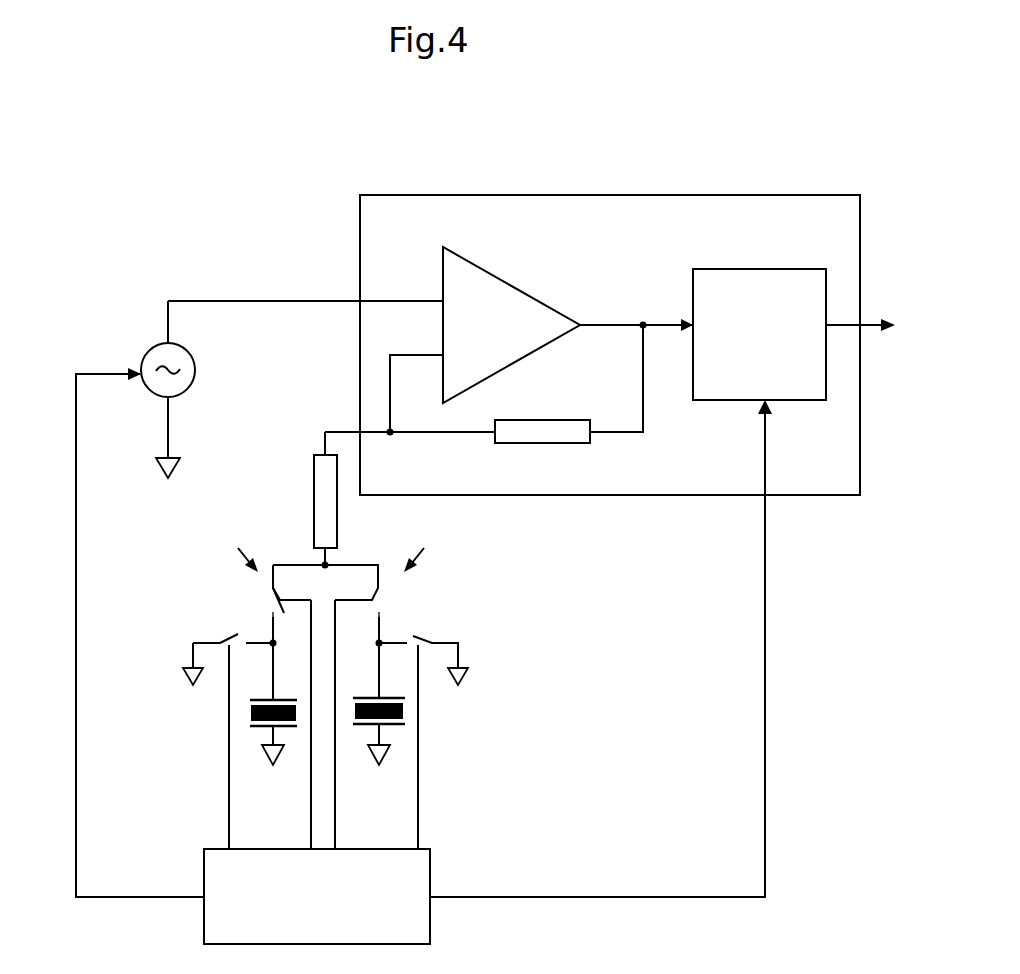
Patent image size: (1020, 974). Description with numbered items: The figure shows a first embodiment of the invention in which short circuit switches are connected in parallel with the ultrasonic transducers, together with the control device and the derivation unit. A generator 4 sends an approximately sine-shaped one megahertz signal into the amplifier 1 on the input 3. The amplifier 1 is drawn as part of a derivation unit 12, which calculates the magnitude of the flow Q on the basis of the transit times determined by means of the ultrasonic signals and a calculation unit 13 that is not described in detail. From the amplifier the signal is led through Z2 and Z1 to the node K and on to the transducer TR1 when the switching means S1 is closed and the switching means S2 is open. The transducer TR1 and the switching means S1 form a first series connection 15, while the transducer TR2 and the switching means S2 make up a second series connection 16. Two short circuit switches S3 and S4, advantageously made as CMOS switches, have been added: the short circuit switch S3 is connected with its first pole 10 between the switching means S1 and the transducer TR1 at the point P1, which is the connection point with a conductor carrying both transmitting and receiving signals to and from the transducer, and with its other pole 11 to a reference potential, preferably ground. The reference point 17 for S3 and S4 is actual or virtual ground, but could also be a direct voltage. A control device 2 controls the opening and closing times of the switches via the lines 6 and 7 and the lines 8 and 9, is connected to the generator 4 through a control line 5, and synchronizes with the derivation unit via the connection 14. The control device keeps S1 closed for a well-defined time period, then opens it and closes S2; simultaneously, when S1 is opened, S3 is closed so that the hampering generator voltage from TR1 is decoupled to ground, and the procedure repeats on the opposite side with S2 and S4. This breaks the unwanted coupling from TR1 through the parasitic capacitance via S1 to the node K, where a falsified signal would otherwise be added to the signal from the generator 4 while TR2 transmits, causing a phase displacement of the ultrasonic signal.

The amplifier 1 is at (511, 325).
The control device 2 is at (317, 896).
The input 3 is at (410, 301).
The generator 4 is at (147, 351).
The control line 5 is at (76, 570).
The line 6 is at (229, 812).
The line 7 is at (418, 812).
The control line for switch S1 8 is at (311, 812).
The control line for switch S2 9 is at (335, 812).
The first pole 10 is at (251, 643).
The other pole 11 is at (216, 634).
The derivation unit 12 is at (598, 496).
The calculation unit 13 is at (759, 334).
The connection 14 is at (765, 683).
The first series connection 15 is at (233, 550).
The second series connection 16 is at (429, 550).
The reference point 17 is at (188, 678).
The impedance Z1 is at (302, 498).
The impedance Z2 is at (542, 419).
The node K is at (325, 588).
The point P1 is at (287, 658).
The switching means S1 is at (255, 601).
The switching means S2 is at (394, 601).
The short circuit switch S3 is at (215, 627).
The short circuit switch S4 is at (422, 648).
The ultrasonic transducer TR1 is at (240, 732).
The ultrasonic transducer TR2 is at (408, 691).
The flow Q is at (876, 329).